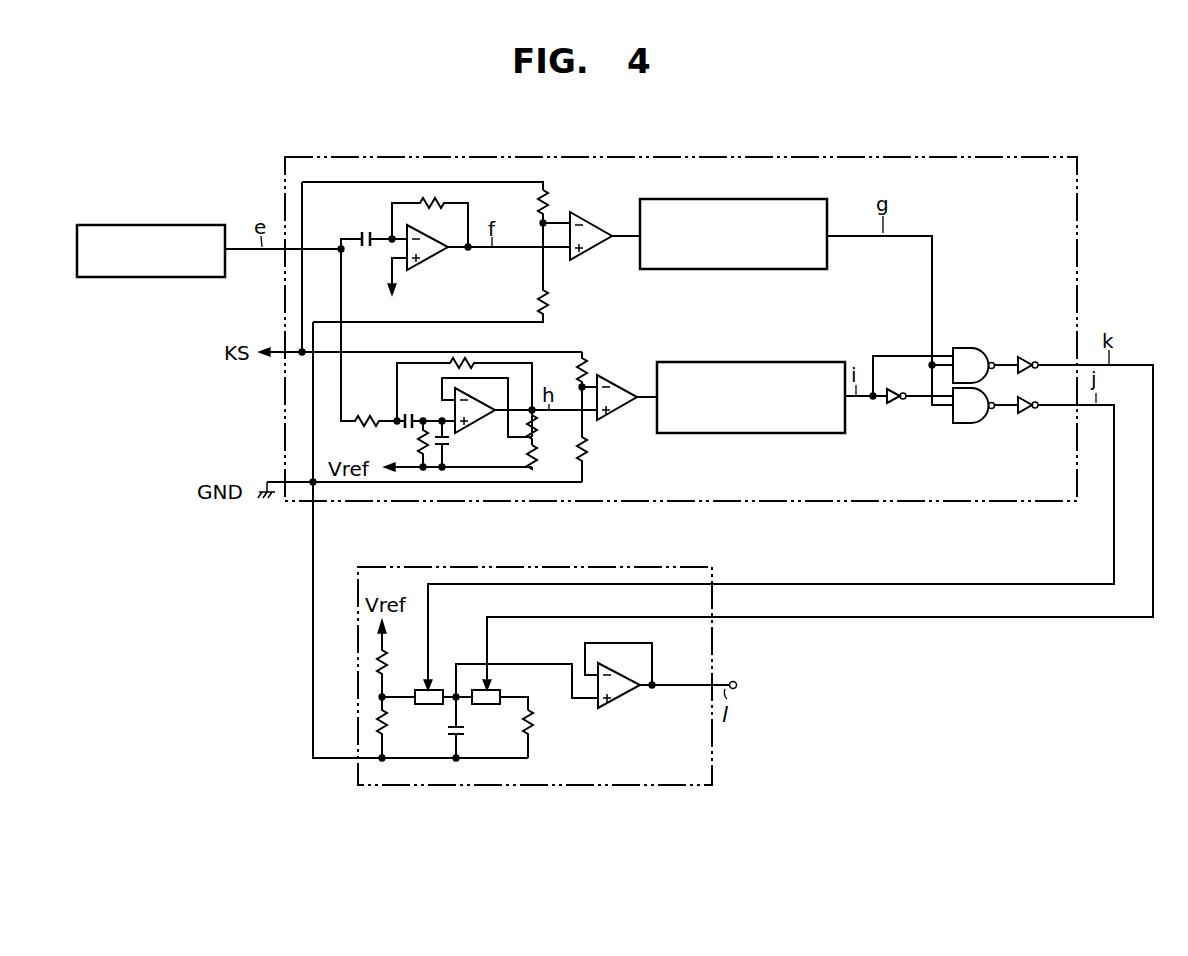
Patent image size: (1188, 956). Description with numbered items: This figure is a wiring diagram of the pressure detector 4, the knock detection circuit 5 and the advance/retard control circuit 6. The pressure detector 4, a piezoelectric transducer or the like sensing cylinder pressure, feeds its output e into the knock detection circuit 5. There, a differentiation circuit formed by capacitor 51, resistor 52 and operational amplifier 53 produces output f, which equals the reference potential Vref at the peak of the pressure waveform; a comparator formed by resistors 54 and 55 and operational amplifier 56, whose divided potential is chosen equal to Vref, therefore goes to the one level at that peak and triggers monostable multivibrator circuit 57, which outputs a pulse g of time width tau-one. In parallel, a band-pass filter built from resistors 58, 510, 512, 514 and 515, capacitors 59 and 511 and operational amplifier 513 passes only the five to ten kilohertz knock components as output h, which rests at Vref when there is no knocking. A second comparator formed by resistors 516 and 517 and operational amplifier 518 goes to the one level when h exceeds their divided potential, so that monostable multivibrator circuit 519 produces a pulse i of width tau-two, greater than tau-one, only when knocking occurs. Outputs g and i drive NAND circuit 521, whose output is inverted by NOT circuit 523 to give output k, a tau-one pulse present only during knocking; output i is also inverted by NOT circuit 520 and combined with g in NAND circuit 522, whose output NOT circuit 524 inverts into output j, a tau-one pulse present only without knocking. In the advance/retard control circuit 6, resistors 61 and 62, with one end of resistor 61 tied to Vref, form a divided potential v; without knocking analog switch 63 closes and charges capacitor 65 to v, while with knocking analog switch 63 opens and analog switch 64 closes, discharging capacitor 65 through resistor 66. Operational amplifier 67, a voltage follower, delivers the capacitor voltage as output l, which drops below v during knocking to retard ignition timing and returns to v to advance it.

The pressure detector 4 is at (161, 225).
The knock detection circuit 5 is at (1077, 226).
The advance/retard control circuit 6 is at (580, 787).
The capacitor 51 is at (361, 230).
The resistor 52 is at (421, 203).
The operational amplifier 53 is at (437, 253).
The resistor 54 is at (542, 204).
The resistor 55 is at (541, 296).
The operational amplifier 56 is at (597, 222).
The monostable multivibrator circuit 57 is at (759, 199).
The resistor 58 is at (371, 419).
The capacitor 59 is at (409, 414).
The resistor 510 is at (418, 445).
The capacitor 511 is at (450, 445).
The resistor 512 is at (470, 359).
The operational amplifier 513 is at (479, 423).
The resistor 514 is at (534, 421).
The resistor 515 is at (534, 452).
The resistor 516 is at (582, 358).
The resistor 517 is at (587, 448).
The operational amplifier 518 is at (621, 367).
The monostable multivibrator circuit 519 is at (772, 362).
The NOT circuit 520 is at (893, 404).
The NAND circuit 521 is at (968, 348).
The NAND circuit 522 is at (968, 423).
The NOT circuit 523 is at (1027, 356).
The NOT circuit 524 is at (1026, 413).
The resistor 61 is at (376, 678).
The resistor 62 is at (379, 737).
The analog switch 63 is at (427, 704).
The analog switch 64 is at (487, 704).
The capacitor 65 is at (463, 740).
The resistor 66 is at (533, 725).
The operational amplifier 67 is at (620, 694).